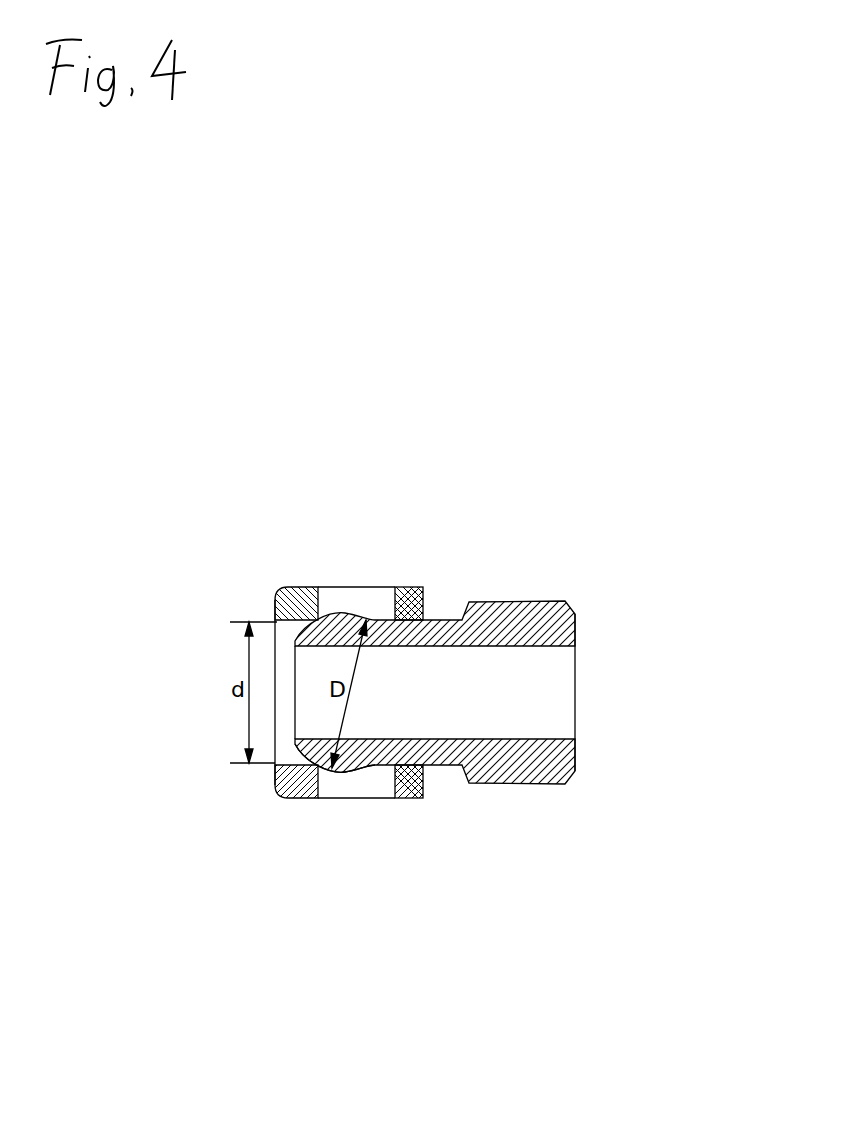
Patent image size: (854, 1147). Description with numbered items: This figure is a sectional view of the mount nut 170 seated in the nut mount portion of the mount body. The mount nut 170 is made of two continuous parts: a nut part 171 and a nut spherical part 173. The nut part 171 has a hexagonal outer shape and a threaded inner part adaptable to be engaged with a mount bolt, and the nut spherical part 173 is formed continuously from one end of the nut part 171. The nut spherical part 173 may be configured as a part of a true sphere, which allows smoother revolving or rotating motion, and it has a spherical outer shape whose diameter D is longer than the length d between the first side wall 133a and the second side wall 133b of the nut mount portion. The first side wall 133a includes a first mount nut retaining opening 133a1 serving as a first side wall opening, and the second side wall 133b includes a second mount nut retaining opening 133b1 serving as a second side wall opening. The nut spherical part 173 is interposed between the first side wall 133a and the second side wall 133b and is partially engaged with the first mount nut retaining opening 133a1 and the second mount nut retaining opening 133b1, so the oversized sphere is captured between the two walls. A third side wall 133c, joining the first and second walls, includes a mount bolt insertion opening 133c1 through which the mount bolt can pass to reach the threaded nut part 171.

The mount nut 170 is at (695, 832).
The nut part 171 is at (520, 773).
The nut spherical part 173 is at (352, 757).
The first side wall 133a is at (306, 793).
The first mount nut retaining opening 133a1 is at (343, 797).
The second side wall 133b is at (300, 587).
The second mount nut retaining opening 133b1 is at (375, 587).
The third side wall 133c is at (280, 790).
The mount bolt insertion opening 133c1 is at (286, 723).